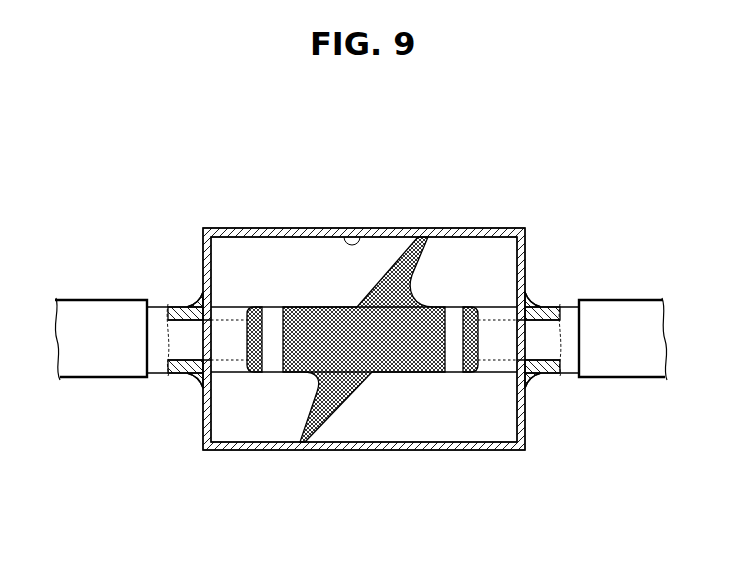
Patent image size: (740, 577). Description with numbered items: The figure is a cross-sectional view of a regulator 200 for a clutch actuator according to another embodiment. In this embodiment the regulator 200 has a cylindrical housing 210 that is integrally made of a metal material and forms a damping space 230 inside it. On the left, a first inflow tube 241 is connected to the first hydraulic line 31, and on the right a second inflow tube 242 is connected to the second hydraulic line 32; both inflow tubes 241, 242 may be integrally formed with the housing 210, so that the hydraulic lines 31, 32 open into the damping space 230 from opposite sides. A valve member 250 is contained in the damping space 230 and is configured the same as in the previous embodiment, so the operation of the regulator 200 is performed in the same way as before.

The regulator 200 is at (363, 314).
The cylindrical housing 210 is at (268, 229).
The damping space 230 is at (352, 236).
The first inflow tube 241 is at (183, 310).
The second inflow tube 242 is at (543, 308).
The valve member 250 is at (382, 415).
The first hydraulic line 31 is at (97, 313).
The second hydraulic line 32 is at (631, 315).